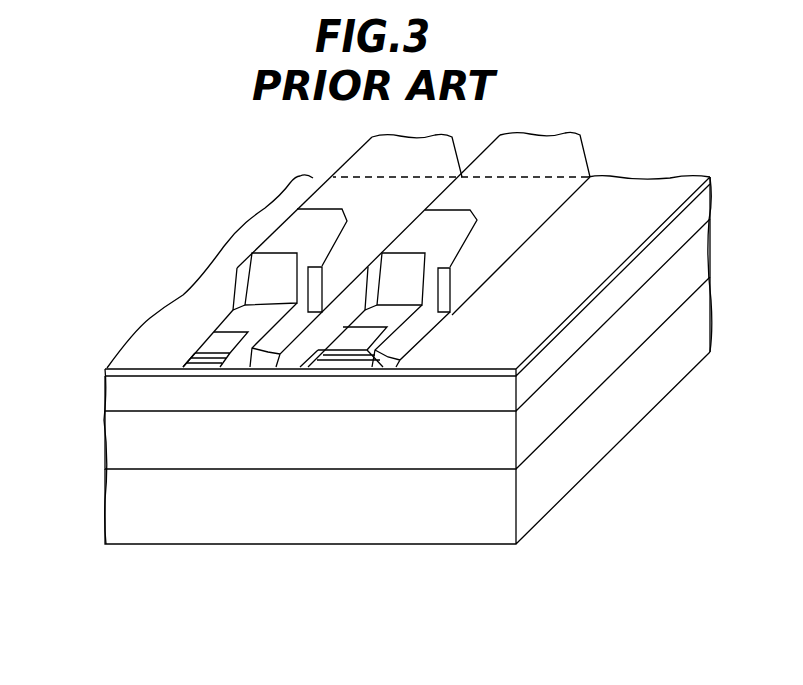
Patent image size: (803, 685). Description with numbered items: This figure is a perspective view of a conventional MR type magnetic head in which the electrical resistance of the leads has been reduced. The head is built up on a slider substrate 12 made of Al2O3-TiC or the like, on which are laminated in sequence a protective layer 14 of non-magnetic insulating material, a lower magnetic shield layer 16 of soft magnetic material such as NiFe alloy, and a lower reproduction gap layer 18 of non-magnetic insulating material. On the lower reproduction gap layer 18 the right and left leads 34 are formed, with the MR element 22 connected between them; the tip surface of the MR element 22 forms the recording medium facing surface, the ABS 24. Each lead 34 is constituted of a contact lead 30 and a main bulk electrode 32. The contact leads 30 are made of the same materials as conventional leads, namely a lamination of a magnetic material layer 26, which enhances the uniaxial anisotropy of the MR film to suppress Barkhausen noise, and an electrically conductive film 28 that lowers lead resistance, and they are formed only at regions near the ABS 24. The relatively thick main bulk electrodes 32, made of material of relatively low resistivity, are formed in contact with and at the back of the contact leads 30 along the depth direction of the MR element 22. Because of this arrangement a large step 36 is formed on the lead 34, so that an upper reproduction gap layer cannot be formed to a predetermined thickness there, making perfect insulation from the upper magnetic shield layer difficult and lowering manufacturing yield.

The slider substrate 12 is at (128, 503).
The protective layer 14 is at (130, 437).
The lower magnetic shield layer 16 is at (125, 392).
The lower reproduction gap layer 18 is at (436, 372).
The MR element 22 is at (283, 372).
The ABS (air bearing surface) 24 is at (217, 462).
The magnetic material layer 26 is at (408, 342).
The electrically conductive film 28 is at (417, 318).
The contact leads 30 is at (387, 320).
The main bulk electrodes 32 is at (487, 190).
The leads 34 is at (134, 135).
The step 36 is at (273, 280).